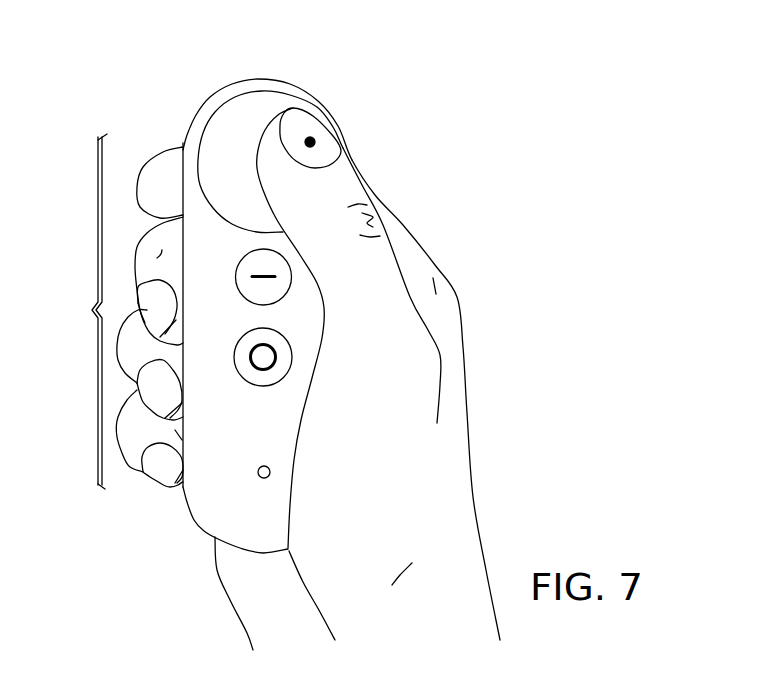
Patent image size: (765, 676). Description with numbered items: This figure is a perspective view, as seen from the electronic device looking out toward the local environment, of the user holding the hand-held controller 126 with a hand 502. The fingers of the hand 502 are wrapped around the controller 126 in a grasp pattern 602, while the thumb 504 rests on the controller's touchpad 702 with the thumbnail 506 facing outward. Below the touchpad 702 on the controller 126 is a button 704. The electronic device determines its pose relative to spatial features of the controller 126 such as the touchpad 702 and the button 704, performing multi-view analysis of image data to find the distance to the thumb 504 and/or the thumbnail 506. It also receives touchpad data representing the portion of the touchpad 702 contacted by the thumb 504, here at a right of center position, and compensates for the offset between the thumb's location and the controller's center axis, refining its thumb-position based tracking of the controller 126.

The hand-held controller 126 is at (203, 533).
The touchpad 702 is at (247, 81).
The grasp pattern 602 is at (75, 311).
The button 704 is at (257, 388).
The thumbnail 506 is at (316, 141).
The thumb 504 is at (383, 270).
The hand 502 is at (478, 377).